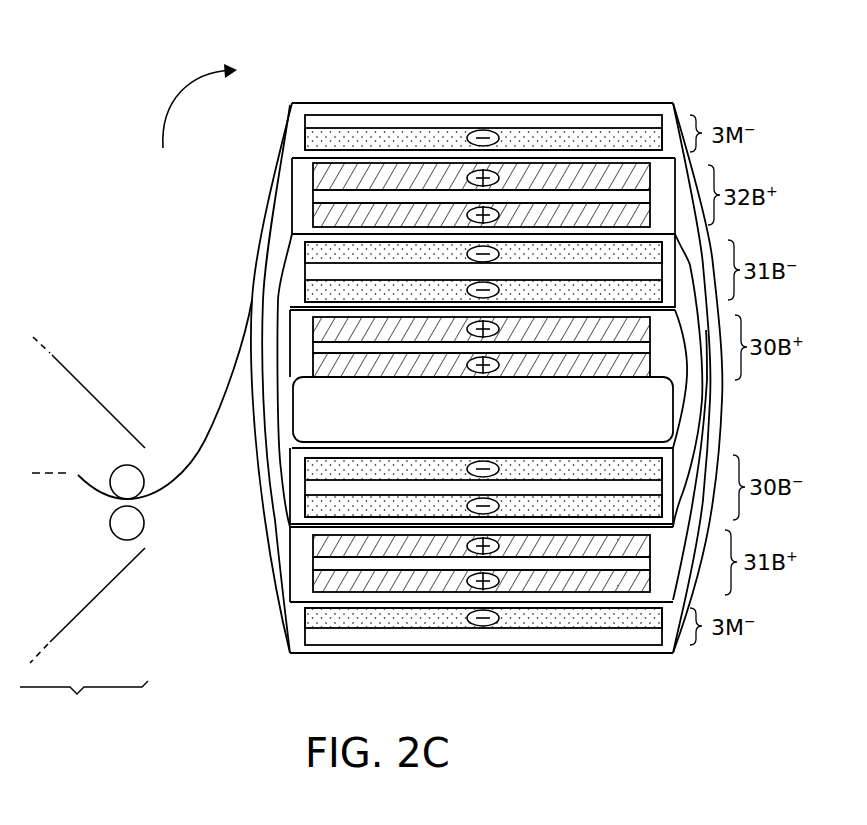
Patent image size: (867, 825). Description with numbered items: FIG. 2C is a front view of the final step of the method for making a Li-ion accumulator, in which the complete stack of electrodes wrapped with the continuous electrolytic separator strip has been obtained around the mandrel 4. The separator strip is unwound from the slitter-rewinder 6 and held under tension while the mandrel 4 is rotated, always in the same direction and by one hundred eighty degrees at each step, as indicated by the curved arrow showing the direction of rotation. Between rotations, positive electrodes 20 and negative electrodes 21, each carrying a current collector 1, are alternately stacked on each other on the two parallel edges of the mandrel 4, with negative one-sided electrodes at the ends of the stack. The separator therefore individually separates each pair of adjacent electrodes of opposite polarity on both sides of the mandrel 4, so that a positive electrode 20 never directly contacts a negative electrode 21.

The current collector 1 is at (317, 123).
The positive electrode 20 is at (313, 322).
The negative electrode 21 is at (313, 253).
The mandrel 4 is at (663, 408).
The slitter-rewinder 6 is at (84, 530).